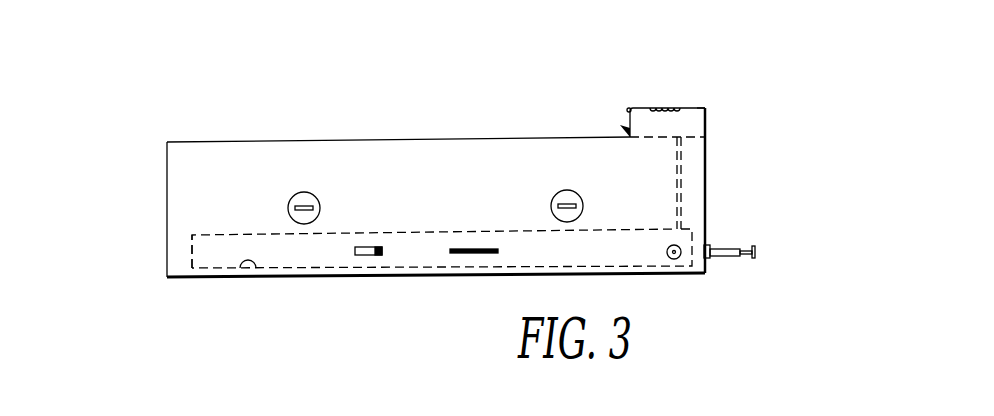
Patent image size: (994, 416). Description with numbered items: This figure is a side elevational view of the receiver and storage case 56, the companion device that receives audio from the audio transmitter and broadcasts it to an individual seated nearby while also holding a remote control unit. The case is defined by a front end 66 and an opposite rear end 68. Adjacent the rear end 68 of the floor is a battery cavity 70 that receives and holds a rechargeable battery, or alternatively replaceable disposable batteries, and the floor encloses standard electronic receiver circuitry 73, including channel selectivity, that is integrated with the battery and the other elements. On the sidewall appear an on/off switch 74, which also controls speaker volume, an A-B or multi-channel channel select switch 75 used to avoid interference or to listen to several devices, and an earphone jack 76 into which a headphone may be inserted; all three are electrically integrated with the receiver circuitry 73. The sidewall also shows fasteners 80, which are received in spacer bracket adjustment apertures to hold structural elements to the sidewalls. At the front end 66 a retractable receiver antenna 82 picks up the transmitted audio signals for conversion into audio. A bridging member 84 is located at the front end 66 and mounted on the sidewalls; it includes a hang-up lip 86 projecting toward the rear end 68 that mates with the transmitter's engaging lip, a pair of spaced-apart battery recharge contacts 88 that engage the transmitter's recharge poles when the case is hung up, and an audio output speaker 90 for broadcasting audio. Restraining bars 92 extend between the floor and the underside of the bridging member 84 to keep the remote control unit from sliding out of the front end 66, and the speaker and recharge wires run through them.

The receiver and storage case 56 is at (498, 115).
The front end 66 is at (718, 94).
The rear end 68 is at (138, 304).
The battery cavity 70 is at (256, 271).
The receiver circuitry 73 is at (406, 270).
The on/off switch 74 is at (486, 247).
The channel select switch 75 is at (378, 258).
The earphone jack 76 is at (674, 260).
The fasteners 80 is at (320, 208).
The retractable receiver antenna 82 is at (727, 259).
The bridging member 84 is at (697, 107).
The hang-up lip 86 is at (621, 127).
The battery recharge contacts 88 is at (627, 110).
The audio output speaker 90 is at (662, 107).
The restraining bars 92 is at (683, 172).